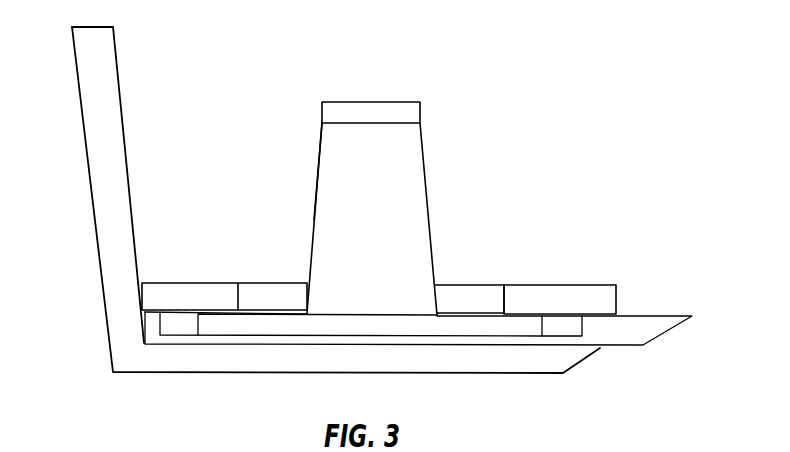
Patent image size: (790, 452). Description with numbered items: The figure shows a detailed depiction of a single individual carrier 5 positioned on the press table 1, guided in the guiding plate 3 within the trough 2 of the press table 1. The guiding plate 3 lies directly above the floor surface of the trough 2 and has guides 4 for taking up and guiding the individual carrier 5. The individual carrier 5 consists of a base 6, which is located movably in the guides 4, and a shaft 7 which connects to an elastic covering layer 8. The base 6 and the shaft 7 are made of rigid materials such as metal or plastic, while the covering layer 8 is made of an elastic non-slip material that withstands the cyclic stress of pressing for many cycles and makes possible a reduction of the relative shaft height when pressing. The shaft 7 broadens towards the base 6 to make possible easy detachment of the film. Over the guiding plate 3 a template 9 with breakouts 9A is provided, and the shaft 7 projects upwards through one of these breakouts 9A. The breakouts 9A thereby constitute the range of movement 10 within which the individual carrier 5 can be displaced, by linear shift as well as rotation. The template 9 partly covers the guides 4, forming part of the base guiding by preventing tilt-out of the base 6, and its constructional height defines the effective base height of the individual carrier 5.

The press table 1 is at (646, 123).
The trough 2 is at (90, 58).
The guiding plate 3 is at (622, 335).
The guides 4 is at (553, 327).
The individual carrier 5 is at (312, 208).
The base 6 is at (278, 325).
The shaft 7 is at (327, 163).
The elastic covering layer 8 is at (395, 110).
The template 9 is at (560, 292).
The breakouts 9A is at (505, 300).
The range of movement 10 is at (452, 295).